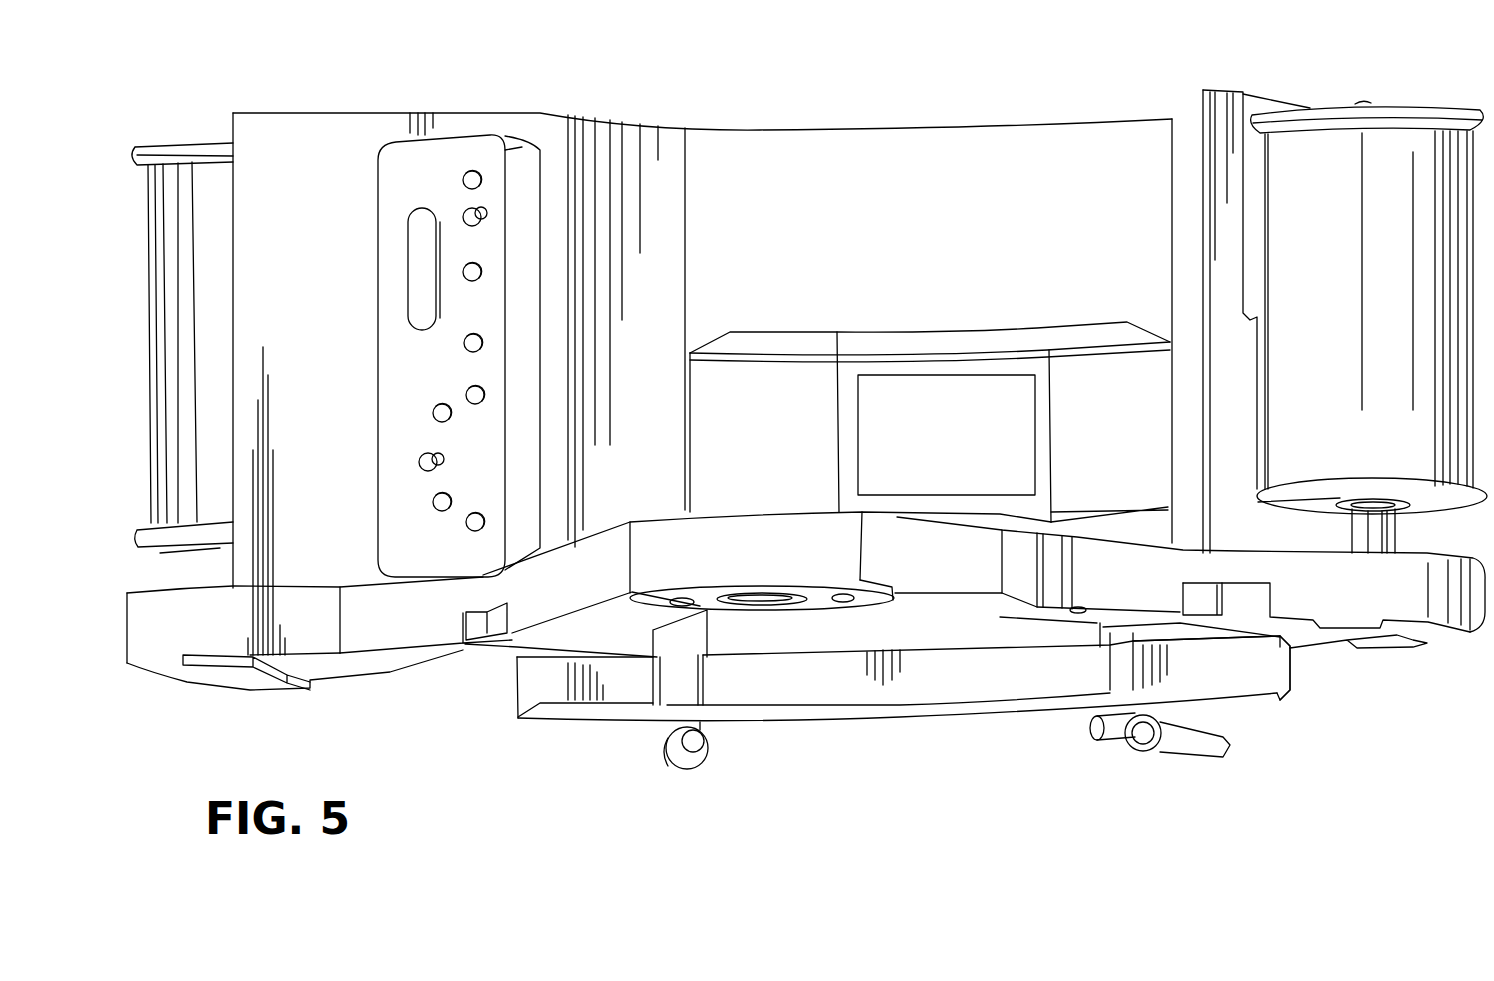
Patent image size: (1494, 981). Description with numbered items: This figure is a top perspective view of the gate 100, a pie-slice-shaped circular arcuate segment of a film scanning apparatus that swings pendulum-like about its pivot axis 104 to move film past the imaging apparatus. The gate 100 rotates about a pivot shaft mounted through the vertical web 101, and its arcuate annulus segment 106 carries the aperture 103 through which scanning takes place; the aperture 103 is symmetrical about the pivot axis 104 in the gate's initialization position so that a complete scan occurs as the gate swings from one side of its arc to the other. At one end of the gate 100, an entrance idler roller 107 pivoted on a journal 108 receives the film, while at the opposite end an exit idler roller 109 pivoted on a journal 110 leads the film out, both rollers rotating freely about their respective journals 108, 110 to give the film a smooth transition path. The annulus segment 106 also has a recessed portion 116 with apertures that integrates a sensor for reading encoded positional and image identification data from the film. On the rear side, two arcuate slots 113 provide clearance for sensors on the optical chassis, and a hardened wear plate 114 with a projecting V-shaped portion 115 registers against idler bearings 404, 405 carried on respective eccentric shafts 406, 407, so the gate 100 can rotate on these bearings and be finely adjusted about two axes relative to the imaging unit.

The gate 100 is at (836, 78).
The vertical web 101 is at (655, 522).
The aperture 103 is at (962, 445).
The pivot axis 104 is at (800, 598).
The annulus segment 106 is at (831, 237).
The entrance idler roller 107 is at (205, 170).
The journal 108 is at (230, 578).
The exit idler roller 109 is at (1418, 140).
The journal 110 is at (1388, 533).
The arcuate slots 113 is at (468, 625).
The hardened wear plate 114 is at (1283, 657).
The V-shaped portion 115 is at (875, 715).
The recessed portion 116 is at (438, 160).
The idler bearing 404 is at (1147, 750).
The idler bearing 405 is at (707, 750).
The eccentric shaft 406 is at (1200, 752).
The eccentric shaft 407 is at (662, 757).